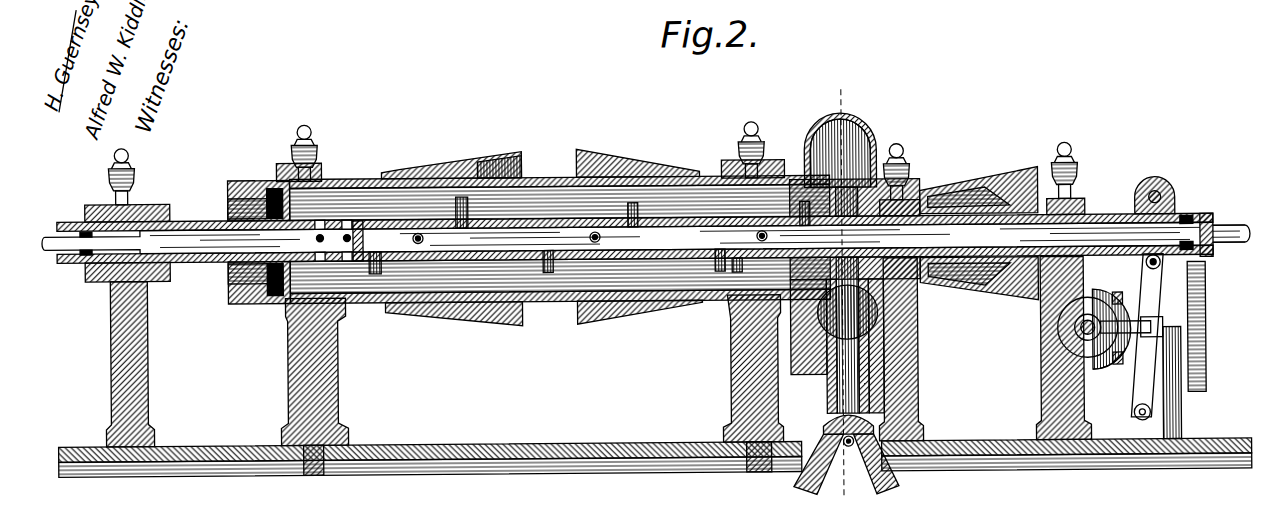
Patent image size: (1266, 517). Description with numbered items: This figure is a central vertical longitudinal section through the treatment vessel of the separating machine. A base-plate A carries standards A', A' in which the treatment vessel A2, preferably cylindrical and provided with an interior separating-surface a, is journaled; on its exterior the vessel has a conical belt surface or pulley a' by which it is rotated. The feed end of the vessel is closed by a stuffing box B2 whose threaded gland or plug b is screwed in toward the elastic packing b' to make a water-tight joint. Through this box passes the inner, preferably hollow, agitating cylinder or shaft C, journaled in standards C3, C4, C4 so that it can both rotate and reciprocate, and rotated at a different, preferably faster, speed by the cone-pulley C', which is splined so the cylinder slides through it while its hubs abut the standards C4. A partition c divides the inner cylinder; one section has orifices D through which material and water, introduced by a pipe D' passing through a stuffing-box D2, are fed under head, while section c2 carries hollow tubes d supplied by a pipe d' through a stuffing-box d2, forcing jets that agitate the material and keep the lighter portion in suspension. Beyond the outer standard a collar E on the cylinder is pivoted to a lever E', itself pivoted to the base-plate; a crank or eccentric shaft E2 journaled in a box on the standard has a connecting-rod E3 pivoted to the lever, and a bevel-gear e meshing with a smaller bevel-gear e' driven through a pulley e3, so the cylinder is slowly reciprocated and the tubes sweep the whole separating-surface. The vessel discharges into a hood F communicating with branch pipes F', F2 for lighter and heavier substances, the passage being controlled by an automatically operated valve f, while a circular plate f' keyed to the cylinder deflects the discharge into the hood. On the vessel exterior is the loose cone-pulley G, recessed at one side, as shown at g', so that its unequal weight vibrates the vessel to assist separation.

The base-plate A is at (654, 443).
The standards A' is at (531, 385).
The treatment vessel A2 is at (553, 181).
The separating-surface a is at (543, 315).
The conical belt surface or pulley a' is at (637, 150).
The stuffing box B2 is at (248, 183).
The threaded gland or plug b is at (265, 284).
The elastic packing b' is at (299, 284).
The agitating cylinder or shaft C is at (635, 221).
The cone-pulley C' is at (982, 220).
The standard C3 is at (148, 338).
The standards C4 is at (917, 372).
The partition c is at (646, 238).
The section c2 is at (590, 238).
The orifices D is at (288, 301).
The pipe or conduit D' is at (112, 277).
The stuffing-box D2 is at (104, 210).
The hollow projections or tubes d is at (589, 233).
The pipe or conduit d' is at (1229, 216).
The stuffing-box d2 is at (1205, 222).
The collar E is at (1159, 190).
The lever E' is at (1155, 346).
The crank or eccentric shaft E2 is at (1075, 333).
The connecting-rod E3 is at (1105, 377).
The bevel-gear e is at (1111, 314).
The bevel-gear e' is at (1122, 312).
The pulley e3 is at (1205, 306).
The hood F is at (855, 289).
The branch pipe F' is at (826, 475).
The branch pipe F2 is at (878, 490).
The valve f is at (834, 425).
The circular plate f' is at (745, 296).
The loose cone-pulley G is at (437, 172).
The lining g' is at (499, 147).